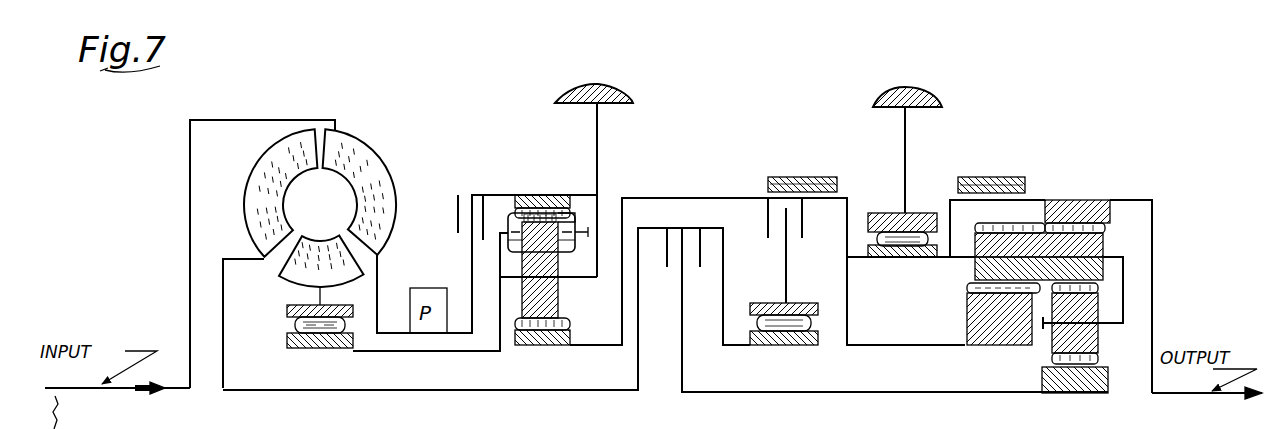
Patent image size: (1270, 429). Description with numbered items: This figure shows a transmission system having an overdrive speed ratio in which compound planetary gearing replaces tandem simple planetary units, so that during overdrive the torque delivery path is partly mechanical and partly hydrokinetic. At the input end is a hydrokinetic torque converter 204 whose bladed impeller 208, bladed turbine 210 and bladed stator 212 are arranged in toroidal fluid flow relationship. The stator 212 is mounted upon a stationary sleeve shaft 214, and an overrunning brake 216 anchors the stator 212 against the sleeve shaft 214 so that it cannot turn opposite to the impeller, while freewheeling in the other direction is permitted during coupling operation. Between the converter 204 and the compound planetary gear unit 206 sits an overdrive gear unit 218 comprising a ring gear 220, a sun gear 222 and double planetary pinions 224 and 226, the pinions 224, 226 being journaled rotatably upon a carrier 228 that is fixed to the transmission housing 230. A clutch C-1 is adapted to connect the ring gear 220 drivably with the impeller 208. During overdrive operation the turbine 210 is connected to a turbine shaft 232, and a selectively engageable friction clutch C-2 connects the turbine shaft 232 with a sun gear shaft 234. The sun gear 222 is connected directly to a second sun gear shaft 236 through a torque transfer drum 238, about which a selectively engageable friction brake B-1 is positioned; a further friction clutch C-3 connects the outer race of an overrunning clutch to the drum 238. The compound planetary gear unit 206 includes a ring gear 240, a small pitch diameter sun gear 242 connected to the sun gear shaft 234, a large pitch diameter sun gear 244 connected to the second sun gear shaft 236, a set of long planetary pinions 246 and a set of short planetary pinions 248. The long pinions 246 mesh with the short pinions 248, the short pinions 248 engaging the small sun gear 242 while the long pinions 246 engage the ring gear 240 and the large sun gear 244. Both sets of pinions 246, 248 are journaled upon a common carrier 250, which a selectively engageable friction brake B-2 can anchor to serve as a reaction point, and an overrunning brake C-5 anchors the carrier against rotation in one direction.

The hydrokinetic torque converter 204 is at (383, 167).
The compound planetary gear unit 206 is at (1030, 220).
The bladed impeller 208 is at (388, 201).
The bladed turbine 210 is at (270, 165).
The bladed stator 212 is at (300, 241).
The stationary sleeve shaft 214 is at (366, 350).
The overrunning brake 216 is at (318, 336).
The overdrive gear unit 218 is at (553, 192).
The ring gear 220 is at (575, 207).
The sun gear 222 is at (540, 341).
The double planetary pinion 224 is at (556, 311).
The double planetary pinion 226 is at (508, 255).
The carrier 228 is at (500, 247).
The transmission housing 230 is at (610, 84).
The turbine shaft 232 is at (399, 390).
The sun gear shaft 234 is at (861, 393).
The second sun gear shaft 236 is at (934, 323).
The torque transfer drum 238 is at (672, 182).
The ring gear 240 is at (1085, 200).
The small pitch diameter sun gear 242 is at (1076, 386).
The large pitch diameter sun gear 244 is at (998, 332).
The long planetary pinions 246 is at (1105, 243).
The short planetary pinions 248 is at (1100, 311).
The common carrier 250 is at (964, 260).
The clutch C-1 is at (489, 193).
The selectively engageable friction clutch C-2 is at (675, 223).
The selectively engageable friction clutch C-3 is at (764, 221).
The overrunning brake C-5 is at (880, 211).
The selectively engageable friction brake B-1 is at (835, 137).
The selectively engageable friction brake B-2 is at (1022, 137).